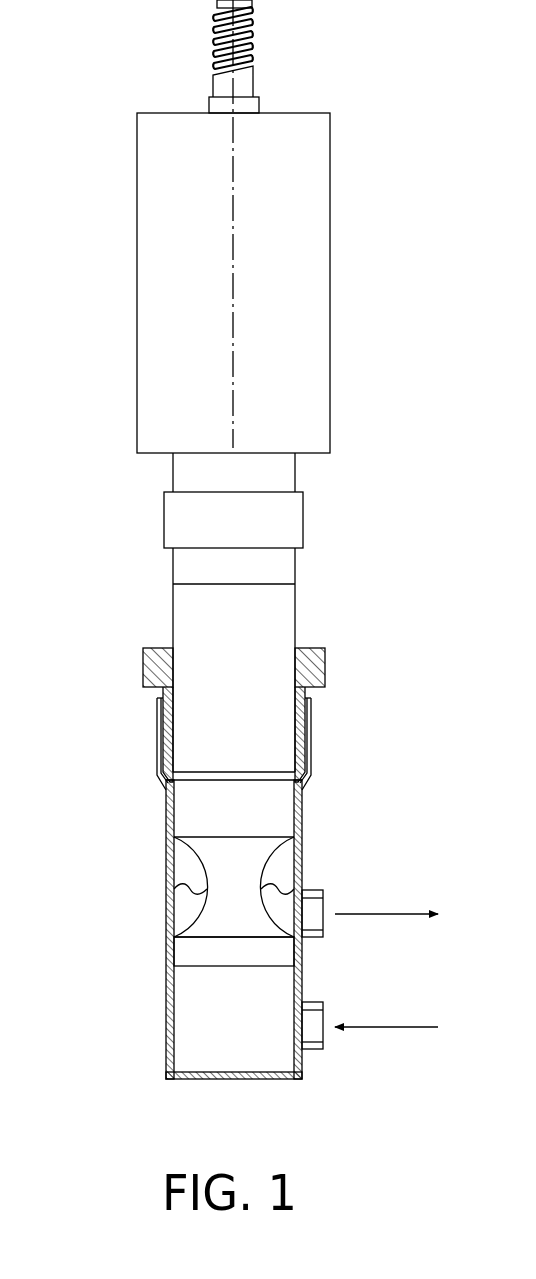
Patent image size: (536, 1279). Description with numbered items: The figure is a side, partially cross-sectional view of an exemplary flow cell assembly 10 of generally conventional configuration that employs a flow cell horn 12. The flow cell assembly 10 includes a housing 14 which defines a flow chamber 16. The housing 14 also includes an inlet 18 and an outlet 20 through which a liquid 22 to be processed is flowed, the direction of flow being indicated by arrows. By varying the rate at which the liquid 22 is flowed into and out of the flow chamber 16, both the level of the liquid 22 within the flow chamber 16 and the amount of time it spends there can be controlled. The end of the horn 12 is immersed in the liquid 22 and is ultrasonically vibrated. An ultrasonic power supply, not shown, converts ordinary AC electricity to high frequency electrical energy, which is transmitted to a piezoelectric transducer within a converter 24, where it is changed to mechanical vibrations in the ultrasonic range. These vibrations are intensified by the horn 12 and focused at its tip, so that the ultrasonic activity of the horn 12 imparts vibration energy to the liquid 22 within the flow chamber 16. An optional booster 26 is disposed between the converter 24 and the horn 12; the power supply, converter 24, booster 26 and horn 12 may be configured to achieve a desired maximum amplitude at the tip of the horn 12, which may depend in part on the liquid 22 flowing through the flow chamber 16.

The flow cell assembly 10 is at (120, 385).
The flow cell horn 12 is at (247, 871).
The housing 14 is at (168, 840).
The flow chamber 16 is at (183, 1018).
The inlet 18 is at (312, 1017).
The outlet 20 is at (312, 905).
The liquid 22 is at (183, 907).
The converter 24 is at (317, 332).
The booster 26 is at (292, 520).